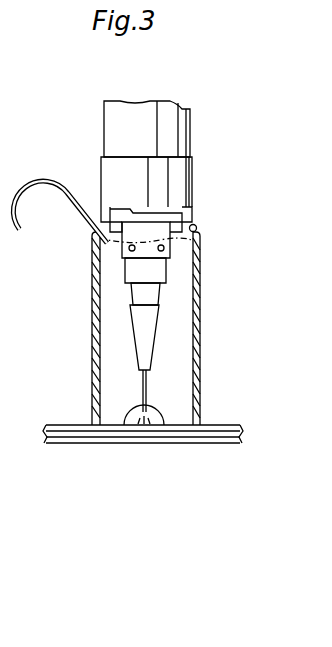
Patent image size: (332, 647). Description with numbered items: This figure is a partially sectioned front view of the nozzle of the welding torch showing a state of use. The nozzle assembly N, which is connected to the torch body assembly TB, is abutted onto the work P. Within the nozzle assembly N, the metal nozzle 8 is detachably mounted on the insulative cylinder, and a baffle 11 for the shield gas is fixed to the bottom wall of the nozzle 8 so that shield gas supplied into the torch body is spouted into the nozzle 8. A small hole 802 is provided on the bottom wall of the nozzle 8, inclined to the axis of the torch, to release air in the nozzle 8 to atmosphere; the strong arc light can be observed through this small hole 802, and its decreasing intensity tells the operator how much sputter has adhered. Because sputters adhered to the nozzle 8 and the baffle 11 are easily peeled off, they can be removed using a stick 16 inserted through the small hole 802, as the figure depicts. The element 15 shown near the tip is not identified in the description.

The torch body assembly TB is at (100, 117).
The stick 16 is at (43, 180).
The small hole 802 is at (196, 227).
The baffle 11 is at (170, 274).
The nozzle assembly N is at (91, 306).
The nozzle 8 is at (200, 332).
The needle 15 is at (148, 396).
The work P is at (188, 444).